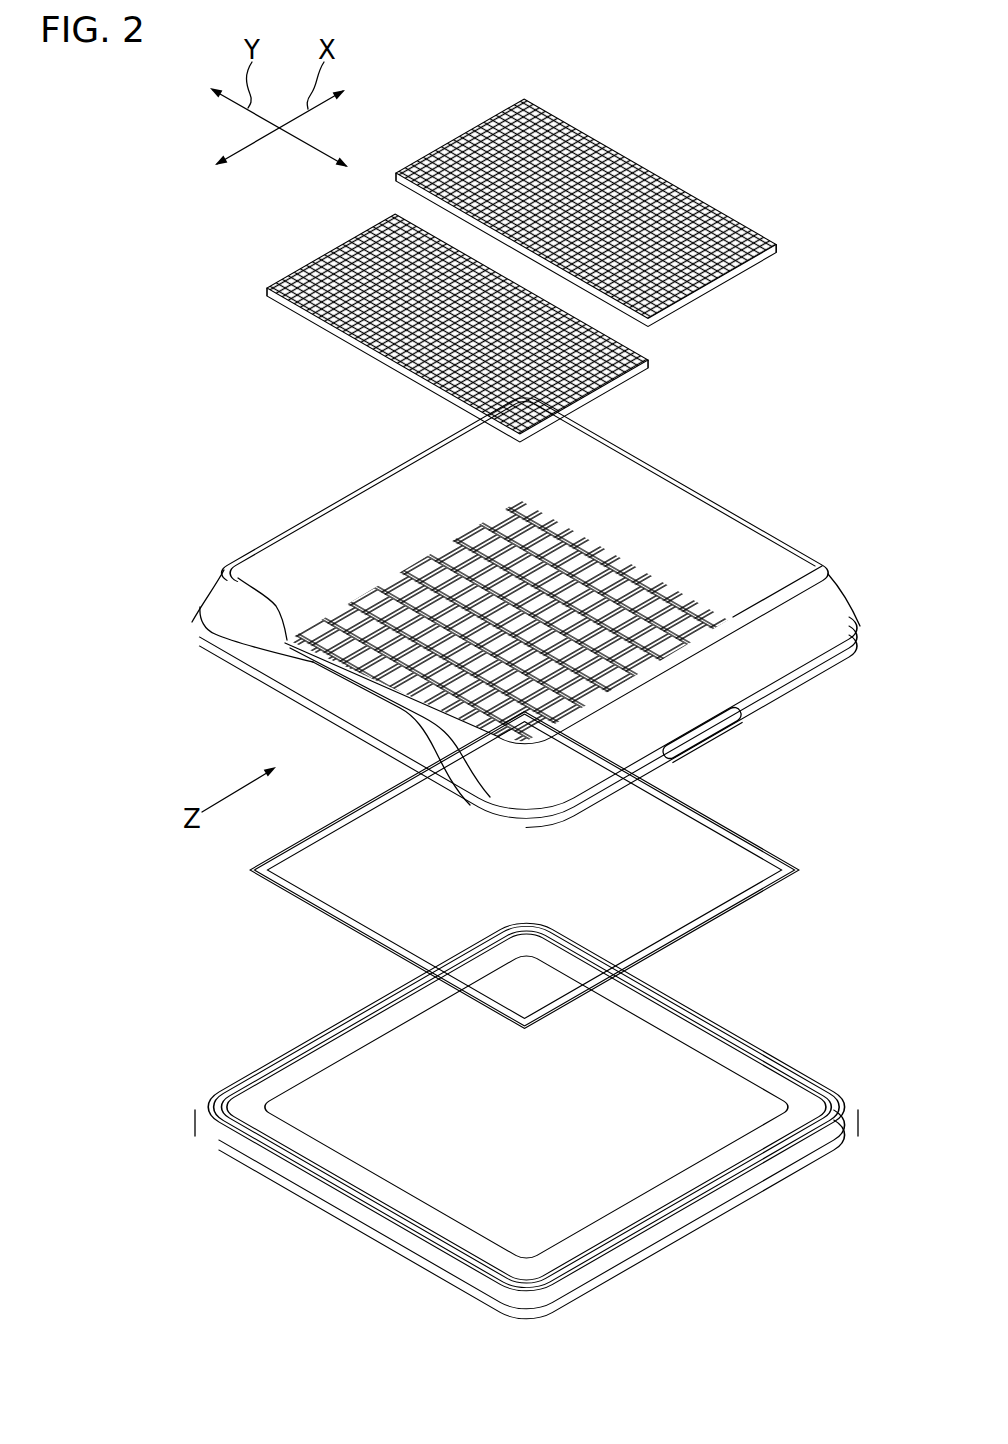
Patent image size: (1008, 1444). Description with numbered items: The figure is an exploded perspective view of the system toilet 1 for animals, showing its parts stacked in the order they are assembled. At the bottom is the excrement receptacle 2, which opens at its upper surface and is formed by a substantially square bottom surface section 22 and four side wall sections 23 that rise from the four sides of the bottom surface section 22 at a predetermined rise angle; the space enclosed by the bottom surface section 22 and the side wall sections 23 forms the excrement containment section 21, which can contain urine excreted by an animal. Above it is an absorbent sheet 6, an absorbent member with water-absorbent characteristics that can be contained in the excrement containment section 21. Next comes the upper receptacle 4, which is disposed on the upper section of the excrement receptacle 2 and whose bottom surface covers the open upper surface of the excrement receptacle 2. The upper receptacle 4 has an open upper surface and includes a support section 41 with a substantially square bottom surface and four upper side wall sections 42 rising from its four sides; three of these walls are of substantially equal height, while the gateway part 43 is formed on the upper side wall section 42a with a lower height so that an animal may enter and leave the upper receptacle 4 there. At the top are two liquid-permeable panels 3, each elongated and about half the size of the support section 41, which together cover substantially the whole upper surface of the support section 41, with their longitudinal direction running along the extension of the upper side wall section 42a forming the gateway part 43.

The system toilet for animals 1 is at (692, 100).
The excrement receptacle 2 is at (530, 1121).
The liquid-permeable panel 3 is at (690, 208).
The upper receptacle 4 is at (513, 617).
The absorbent sheet 6 is at (735, 838).
The excrement containment section 21 is at (338, 1163).
The bottom surface section 22 is at (523, 1122).
The side wall sections 23 is at (428, 1253).
The support section 41 is at (655, 585).
The upper side wall sections 42 is at (745, 573).
The upper side wall section forming the gateway part 42a is at (228, 618).
The gateway part 43 is at (357, 680).